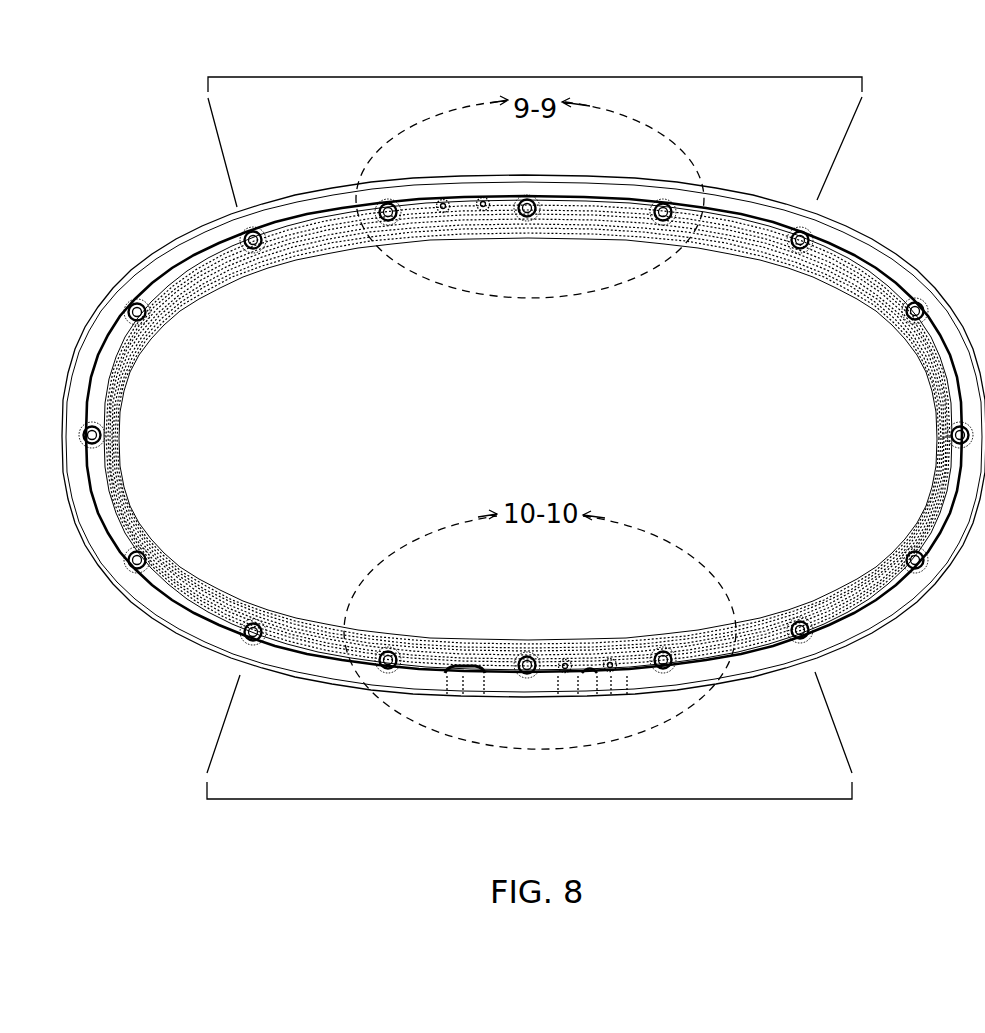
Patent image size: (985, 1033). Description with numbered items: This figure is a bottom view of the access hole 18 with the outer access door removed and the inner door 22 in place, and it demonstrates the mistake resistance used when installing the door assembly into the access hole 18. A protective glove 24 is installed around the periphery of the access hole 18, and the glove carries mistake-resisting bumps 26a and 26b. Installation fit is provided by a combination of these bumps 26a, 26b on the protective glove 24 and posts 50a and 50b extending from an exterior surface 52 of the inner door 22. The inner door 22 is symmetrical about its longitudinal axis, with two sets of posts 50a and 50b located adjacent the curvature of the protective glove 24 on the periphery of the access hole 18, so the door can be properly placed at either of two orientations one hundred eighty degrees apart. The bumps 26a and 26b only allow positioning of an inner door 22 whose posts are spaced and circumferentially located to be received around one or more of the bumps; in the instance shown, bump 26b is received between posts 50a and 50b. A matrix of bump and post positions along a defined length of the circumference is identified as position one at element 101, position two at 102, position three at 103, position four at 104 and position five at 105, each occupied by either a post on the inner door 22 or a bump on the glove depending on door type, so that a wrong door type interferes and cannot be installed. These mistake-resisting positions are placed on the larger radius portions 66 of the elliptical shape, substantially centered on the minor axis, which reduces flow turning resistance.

The inner door 22 is at (725, 322).
The exterior surface 52 is at (346, 311).
The larger radius portions 66 is at (535, 77).
The post 50a is at (483, 211).
The post 50b is at (441, 212).
The protective glove 24 is at (428, 665).
The position 5 105 is at (453, 690).
The bump 26a is at (462, 692).
The position 4 104 is at (475, 692).
The bump 26b is at (600, 690).
The position 3 103 is at (560, 690).
The position 2 102 is at (593, 690).
The position 1 101 is at (603, 680).
The access hole 18 is at (627, 680).